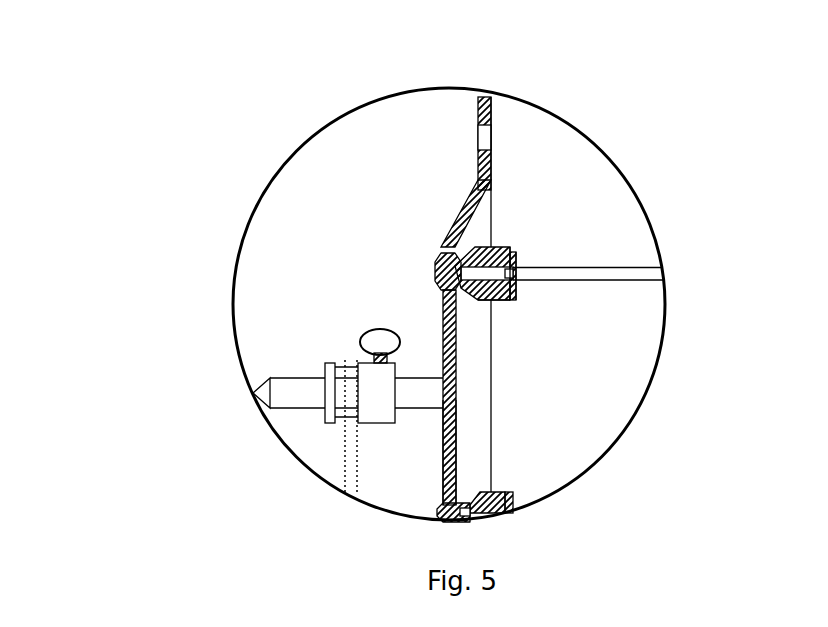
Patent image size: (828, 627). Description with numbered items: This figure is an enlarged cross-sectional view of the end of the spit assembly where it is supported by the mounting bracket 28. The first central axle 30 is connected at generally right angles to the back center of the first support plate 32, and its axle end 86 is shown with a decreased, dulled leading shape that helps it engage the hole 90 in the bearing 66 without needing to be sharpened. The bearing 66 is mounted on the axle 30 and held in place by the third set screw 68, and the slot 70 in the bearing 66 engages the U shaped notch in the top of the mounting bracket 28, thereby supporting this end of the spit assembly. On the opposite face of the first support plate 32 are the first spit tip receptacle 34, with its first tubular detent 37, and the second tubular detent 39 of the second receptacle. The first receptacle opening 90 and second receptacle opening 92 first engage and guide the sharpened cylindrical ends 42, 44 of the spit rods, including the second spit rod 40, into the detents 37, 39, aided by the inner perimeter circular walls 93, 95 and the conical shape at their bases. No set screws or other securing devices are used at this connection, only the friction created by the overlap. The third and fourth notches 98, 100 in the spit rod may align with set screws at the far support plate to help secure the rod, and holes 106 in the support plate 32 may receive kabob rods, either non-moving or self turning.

The axle end 86 is at (264, 388).
The first central axle 30 is at (290, 383).
The bearing 66 is at (328, 374).
The slot 70 is at (352, 371).
The third set screw 68 is at (378, 343).
The first support plate 32 is at (442, 332).
The holes 106 is at (478, 140).
The cylindrical end of first spit rod 42 is at (492, 245).
The inner perimeter circular wall 93 is at (513, 255).
The third notch 98 is at (548, 270).
The second spit rod 40 is at (628, 268).
The mounting bracket 28 is at (343, 468).
The cylindrical end of second spit rod 44 is at (440, 515).
The second tubular detent 39 is at (449, 505).
The fourth notch 100 is at (478, 508).
The inner perimeter circular wall 95 is at (509, 512).
The second receptacle opening 92 is at (497, 300).
The first tubular detent 37 is at (505, 299).
The first spit tip receptacle 34 is at (511, 297).
The first receptacle opening 90 is at (515, 292).